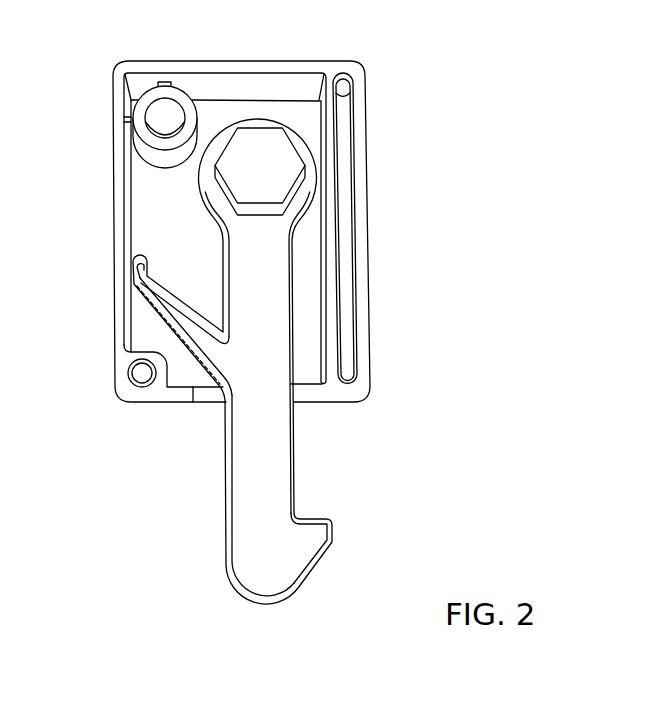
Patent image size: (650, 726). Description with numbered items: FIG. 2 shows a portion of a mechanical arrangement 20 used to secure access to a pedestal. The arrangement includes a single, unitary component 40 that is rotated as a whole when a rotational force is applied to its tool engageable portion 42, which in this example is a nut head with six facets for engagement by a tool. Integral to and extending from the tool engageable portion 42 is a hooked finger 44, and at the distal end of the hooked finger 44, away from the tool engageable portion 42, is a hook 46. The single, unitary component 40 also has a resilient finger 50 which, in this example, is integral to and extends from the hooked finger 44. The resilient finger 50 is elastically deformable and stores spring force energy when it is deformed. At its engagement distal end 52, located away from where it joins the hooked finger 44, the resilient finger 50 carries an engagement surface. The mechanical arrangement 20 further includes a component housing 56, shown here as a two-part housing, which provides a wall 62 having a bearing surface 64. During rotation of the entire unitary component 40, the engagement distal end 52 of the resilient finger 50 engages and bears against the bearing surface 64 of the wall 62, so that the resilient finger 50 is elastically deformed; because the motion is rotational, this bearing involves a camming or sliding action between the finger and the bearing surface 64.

The mechanical arrangement 20 is at (250, 231).
The single, unitary component 40 is at (226, 310).
The tool engageable portion 42 is at (270, 137).
The hooked finger 44 is at (242, 550).
The hook 46 is at (320, 533).
The resilient finger 50 is at (140, 313).
The engagement distal end 52 is at (130, 267).
The component housing 56 is at (362, 270).
The wall 62 is at (115, 170).
The bearing surface 64 is at (144, 217).